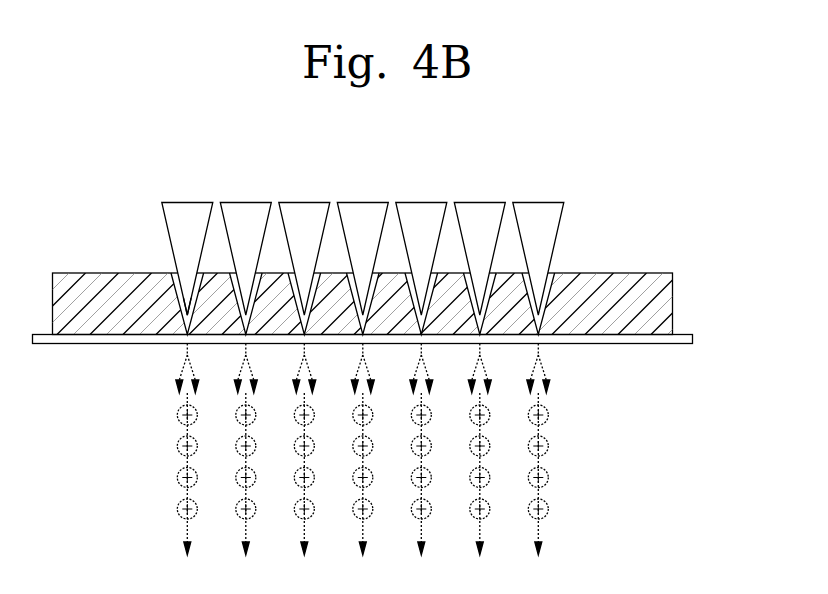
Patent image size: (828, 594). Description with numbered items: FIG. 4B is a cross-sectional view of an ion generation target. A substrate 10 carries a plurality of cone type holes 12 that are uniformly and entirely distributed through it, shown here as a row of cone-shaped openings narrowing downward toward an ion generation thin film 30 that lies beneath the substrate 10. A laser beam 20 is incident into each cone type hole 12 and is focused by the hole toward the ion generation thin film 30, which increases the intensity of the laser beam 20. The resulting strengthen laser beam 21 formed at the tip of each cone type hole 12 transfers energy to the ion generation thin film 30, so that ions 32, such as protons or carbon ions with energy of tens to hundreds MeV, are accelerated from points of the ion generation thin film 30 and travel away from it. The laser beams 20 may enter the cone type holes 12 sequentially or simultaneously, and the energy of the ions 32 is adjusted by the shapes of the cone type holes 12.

The substrate 10 is at (621, 284).
The cone type hole 12 is at (172, 273).
The laser beam 20 is at (480, 212).
The strengthen laser beam 21 is at (185, 347).
The ion generation thin film 30 is at (688, 333).
The ions 32 is at (172, 477).